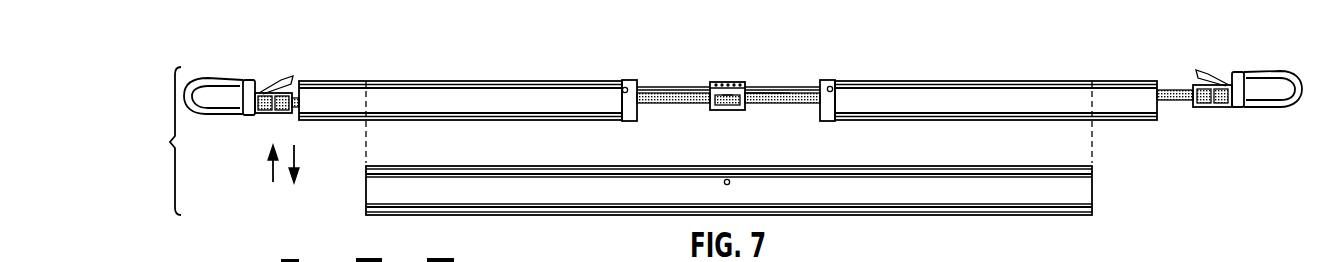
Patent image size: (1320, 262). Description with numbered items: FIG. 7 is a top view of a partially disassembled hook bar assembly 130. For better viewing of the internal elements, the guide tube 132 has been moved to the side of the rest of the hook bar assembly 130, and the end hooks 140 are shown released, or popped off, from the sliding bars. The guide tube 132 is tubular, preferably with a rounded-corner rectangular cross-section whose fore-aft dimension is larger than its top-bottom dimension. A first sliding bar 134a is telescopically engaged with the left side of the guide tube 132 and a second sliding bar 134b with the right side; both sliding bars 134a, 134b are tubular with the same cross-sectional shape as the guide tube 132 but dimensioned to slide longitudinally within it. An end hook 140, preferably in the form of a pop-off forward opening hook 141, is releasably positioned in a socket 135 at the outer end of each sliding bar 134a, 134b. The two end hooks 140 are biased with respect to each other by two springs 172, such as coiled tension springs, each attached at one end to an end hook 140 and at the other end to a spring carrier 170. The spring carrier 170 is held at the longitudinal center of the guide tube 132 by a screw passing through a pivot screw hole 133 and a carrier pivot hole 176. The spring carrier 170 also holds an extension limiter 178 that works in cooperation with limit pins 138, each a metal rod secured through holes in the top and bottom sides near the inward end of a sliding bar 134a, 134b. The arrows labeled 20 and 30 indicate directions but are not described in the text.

The first direction 20 is at (273, 180).
The second direction 30 is at (296, 156).
The hook bar assembly 130 is at (161, 141).
The guide tube 132 is at (528, 216).
The pivot screw hole 133 is at (730, 182).
The first sliding bar 134a is at (444, 81).
The second sliding bar 134b is at (1025, 77).
The socket 135 is at (288, 83).
The limit pin 138 is at (624, 87).
The end hook 140 is at (224, 80).
The pop-off forward opening hook 141 is at (223, 117).
The spring carrier 170 is at (721, 71).
The spring 172 is at (673, 104).
The carrier pivot hole 176 is at (737, 84).
The extension limiter 178 is at (787, 82).